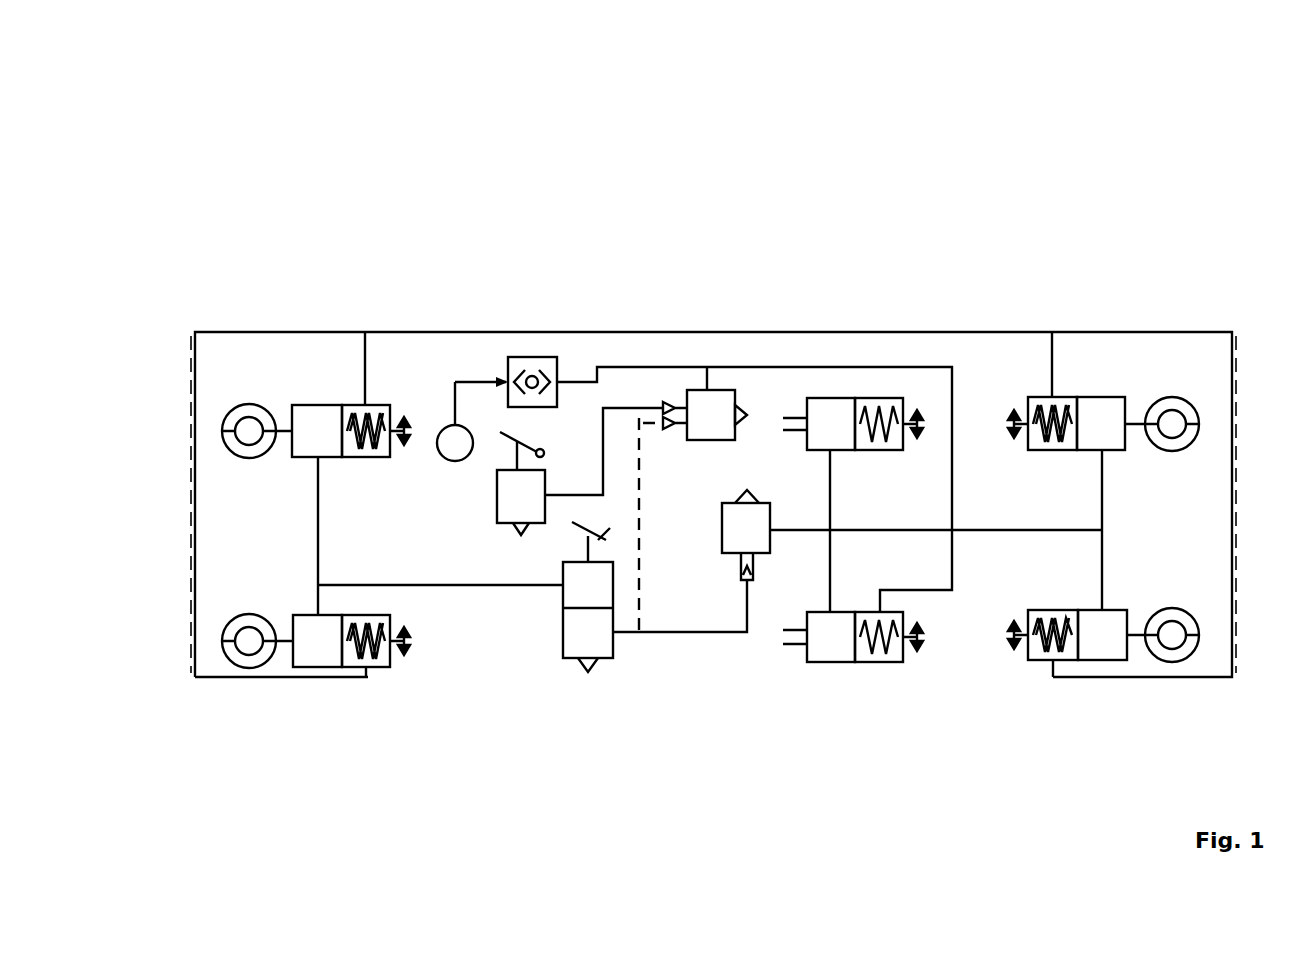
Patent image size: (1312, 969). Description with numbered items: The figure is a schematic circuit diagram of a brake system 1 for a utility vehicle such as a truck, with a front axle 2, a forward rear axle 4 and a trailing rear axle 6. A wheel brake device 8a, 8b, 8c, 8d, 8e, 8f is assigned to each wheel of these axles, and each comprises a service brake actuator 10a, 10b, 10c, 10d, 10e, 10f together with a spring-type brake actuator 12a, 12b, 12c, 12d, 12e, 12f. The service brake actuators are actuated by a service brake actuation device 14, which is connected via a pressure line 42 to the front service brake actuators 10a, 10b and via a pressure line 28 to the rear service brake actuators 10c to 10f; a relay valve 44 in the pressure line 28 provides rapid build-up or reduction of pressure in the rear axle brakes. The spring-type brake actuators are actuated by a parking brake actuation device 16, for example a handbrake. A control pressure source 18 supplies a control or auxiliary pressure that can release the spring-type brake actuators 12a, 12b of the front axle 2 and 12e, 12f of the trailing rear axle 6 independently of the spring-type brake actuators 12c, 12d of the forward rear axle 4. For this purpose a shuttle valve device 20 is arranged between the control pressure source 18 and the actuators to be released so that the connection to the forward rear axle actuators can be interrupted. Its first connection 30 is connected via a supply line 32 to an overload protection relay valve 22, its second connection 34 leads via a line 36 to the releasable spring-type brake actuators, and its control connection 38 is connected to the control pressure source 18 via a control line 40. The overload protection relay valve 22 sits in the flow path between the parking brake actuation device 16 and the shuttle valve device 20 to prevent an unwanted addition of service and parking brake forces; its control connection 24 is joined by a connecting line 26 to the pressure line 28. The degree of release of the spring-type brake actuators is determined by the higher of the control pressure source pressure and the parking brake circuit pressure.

The brake system 1 is at (198, 186).
The front axle 2 is at (311, 720).
The forward rear axle 4 is at (864, 717).
The trailing rear axle 6 is at (1072, 717).
The wheel brake device 8a is at (266, 395).
The wheel brake device 8b is at (268, 606).
The wheel brake device 8c is at (845, 388).
The wheel brake device 8d is at (855, 668).
The wheel brake device 8e is at (1150, 390).
The wheel brake device 8f is at (1154, 603).
The service brake actuator 10a is at (305, 420).
The service brake actuator 10b is at (307, 642).
The service brake actuator 10c is at (820, 410).
The service brake actuator 10d is at (820, 645).
The service brake actuator 10e is at (1108, 410).
The service brake actuator 10f is at (1108, 640).
The spring-type brake actuator 12a is at (368, 410).
The spring-type brake actuator 12b is at (380, 667).
The spring-type brake actuator 12c is at (885, 415).
The spring-type brake actuator 12d is at (893, 662).
The spring-type brake actuator 12e is at (1045, 415).
The spring-type brake actuator 12f is at (1037, 660).
The service brake actuation device 14 is at (583, 640).
The parking brake actuation device 16 is at (512, 505).
The control pressure source 18 is at (457, 447).
The shuttle valve device 20 is at (548, 357).
The overload protection relay valve 22 is at (697, 405).
The control connection 24 is at (675, 430).
The connecting line 26 is at (645, 557).
The pressure line 28 is at (670, 632).
The first connection 30 is at (565, 368).
The supply line 32 is at (732, 367).
The second connection 34 is at (525, 357).
The line 36 is at (433, 332).
The control connection 38 is at (500, 378).
The control line 40 is at (452, 393).
The pressure line 42 is at (490, 585).
The relay valve 44 is at (757, 520).